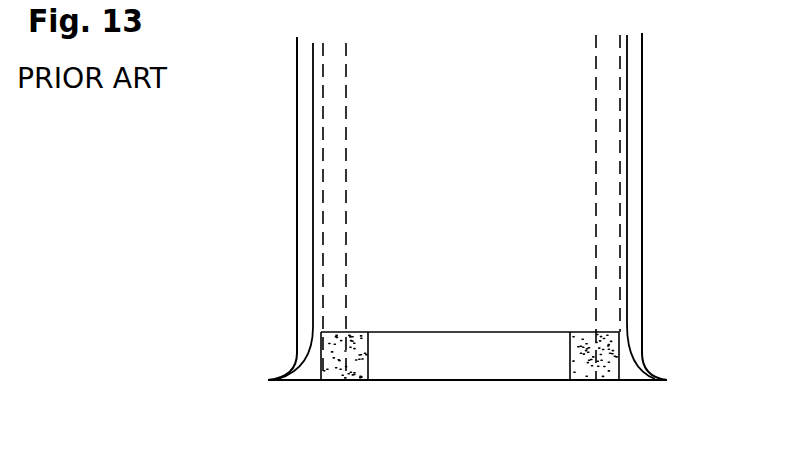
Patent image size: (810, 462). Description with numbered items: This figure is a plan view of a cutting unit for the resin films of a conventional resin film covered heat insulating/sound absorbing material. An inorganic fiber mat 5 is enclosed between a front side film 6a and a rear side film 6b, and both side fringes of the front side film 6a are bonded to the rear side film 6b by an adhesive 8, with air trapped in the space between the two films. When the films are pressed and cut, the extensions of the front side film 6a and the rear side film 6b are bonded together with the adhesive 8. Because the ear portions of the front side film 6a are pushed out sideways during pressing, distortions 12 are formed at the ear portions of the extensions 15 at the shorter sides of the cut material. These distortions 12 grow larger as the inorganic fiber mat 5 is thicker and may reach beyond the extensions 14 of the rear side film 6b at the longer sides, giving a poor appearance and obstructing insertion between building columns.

The front side film 6a is at (627, 82).
The rear side film 6b is at (642, 133).
The extension 14 is at (633, 180).
The inorganic fiber mat 5 is at (618, 250).
The distortion 12 is at (640, 371).
The extension 15 is at (460, 358).
The adhesive 8 is at (602, 362).